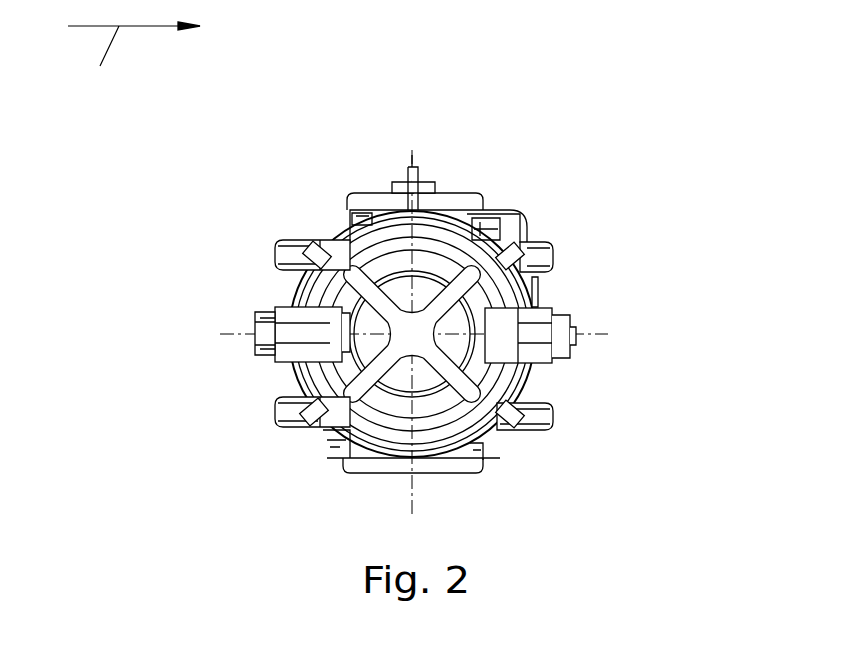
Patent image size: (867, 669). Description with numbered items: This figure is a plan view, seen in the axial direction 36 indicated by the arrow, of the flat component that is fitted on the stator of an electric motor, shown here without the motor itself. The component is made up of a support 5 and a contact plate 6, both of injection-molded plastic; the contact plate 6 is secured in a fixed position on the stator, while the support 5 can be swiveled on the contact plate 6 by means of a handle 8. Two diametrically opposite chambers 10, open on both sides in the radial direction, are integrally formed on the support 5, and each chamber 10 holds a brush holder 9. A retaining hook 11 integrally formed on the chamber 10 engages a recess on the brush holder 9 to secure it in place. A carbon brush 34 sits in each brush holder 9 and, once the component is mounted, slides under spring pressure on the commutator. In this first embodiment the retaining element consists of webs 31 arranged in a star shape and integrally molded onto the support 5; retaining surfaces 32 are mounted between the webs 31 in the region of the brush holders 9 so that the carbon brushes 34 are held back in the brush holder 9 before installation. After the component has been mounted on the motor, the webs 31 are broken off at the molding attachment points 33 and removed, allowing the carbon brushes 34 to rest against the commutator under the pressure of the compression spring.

The support 5 is at (520, 395).
The contact plate 6 is at (532, 242).
The handle 8 is at (418, 177).
The brush holder 9 is at (575, 319).
The chamber 10 is at (530, 315).
The retaining hook 11 is at (577, 341).
The web 31 is at (547, 248).
The retaining surface 32 is at (465, 278).
The molding attachment point 33 is at (350, 270).
The carbon brush 34 is at (343, 340).
The axial direction 36 is at (123, 76).